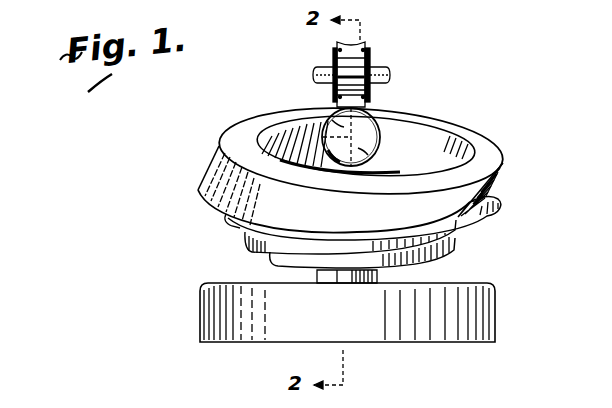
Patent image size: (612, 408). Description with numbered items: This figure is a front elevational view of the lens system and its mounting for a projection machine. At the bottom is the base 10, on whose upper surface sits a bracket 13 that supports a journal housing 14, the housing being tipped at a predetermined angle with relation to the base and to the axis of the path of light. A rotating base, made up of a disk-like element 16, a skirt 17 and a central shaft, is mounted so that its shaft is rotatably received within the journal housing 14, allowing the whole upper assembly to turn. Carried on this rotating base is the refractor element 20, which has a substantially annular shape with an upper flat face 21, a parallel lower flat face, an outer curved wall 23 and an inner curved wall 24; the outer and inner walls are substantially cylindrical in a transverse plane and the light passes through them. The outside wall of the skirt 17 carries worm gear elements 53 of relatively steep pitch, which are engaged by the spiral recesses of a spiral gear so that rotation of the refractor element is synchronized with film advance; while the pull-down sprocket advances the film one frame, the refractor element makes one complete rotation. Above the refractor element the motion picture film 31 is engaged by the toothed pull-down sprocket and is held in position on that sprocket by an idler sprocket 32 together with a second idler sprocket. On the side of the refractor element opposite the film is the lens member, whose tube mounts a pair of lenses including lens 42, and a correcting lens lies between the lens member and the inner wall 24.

The base 10 is at (497, 308).
The bracket 13 is at (405, 267).
The journal housing 14 is at (333, 275).
The disk-like element 16 is at (503, 200).
The skirt 17 is at (452, 250).
The refractor element 20 is at (463, 137).
The upper flat face 21 is at (497, 142).
The outer curved wall 23 is at (490, 182).
The inner curved wall 24 is at (423, 142).
The motion picture film 31 is at (362, 42).
The idler sprocket 32 is at (371, 58).
The lens 42 is at (372, 148).
The worm gear elements 53 is at (467, 230).